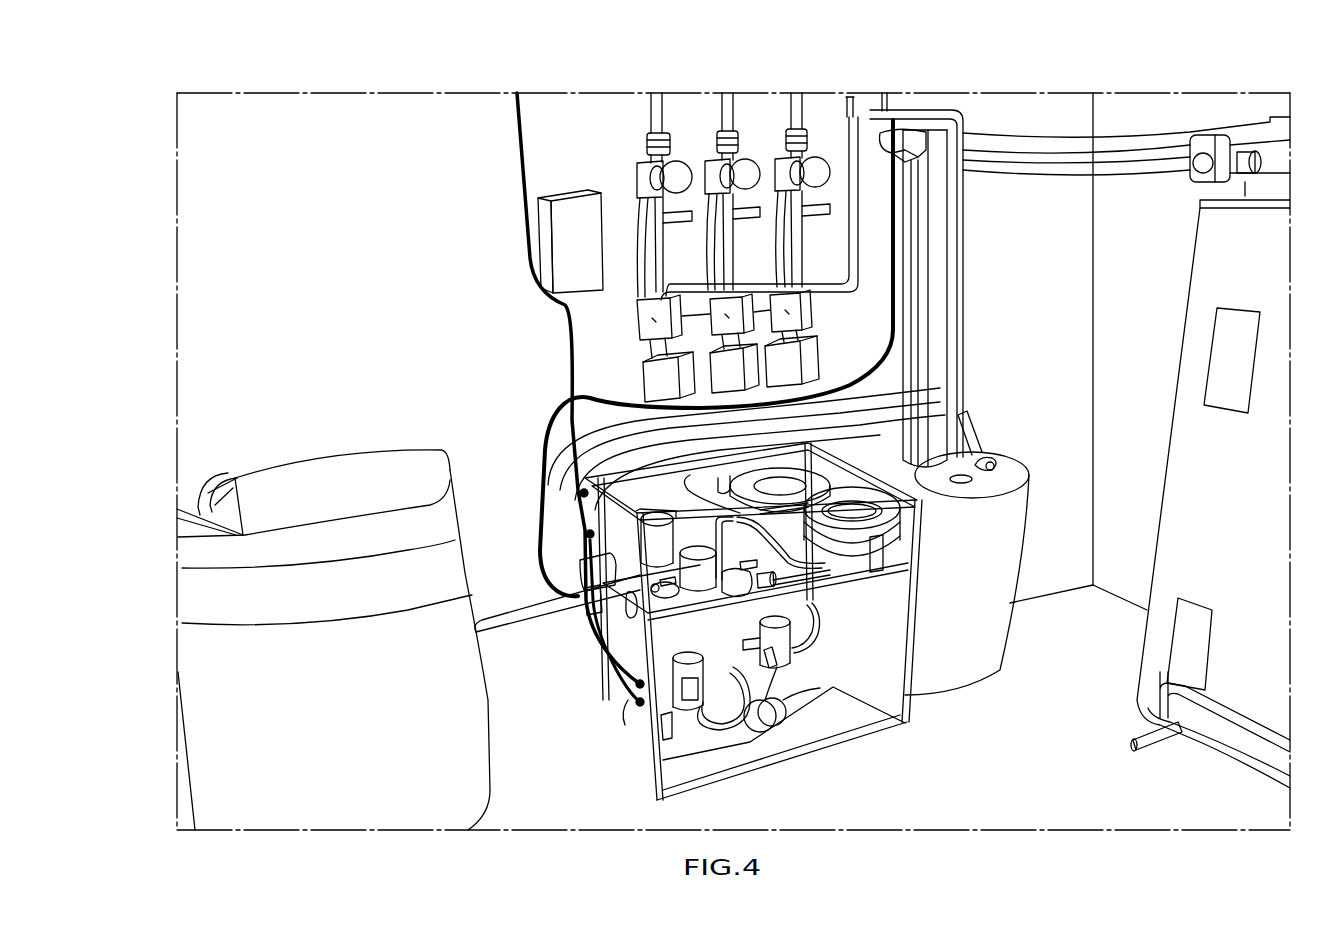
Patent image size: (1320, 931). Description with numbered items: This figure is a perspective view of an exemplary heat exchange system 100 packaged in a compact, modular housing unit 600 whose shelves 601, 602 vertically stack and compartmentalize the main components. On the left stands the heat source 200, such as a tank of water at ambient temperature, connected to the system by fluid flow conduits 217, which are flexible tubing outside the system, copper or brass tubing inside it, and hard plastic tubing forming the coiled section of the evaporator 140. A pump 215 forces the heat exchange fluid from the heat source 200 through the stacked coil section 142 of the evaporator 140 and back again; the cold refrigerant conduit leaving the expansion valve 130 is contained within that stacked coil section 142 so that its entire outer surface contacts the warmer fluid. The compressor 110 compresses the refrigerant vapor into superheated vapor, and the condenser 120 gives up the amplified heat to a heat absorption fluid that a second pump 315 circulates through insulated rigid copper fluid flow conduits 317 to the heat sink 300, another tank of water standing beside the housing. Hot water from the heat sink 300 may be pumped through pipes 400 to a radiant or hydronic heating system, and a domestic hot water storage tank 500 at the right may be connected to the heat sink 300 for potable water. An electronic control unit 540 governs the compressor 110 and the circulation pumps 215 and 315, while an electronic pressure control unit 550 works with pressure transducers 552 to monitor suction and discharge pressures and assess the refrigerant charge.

The heat exchange system 100 is at (736, 388).
The compressor 110 is at (800, 658).
The condenser 120 is at (816, 460).
The expansion valve 130 is at (733, 487).
The evaporator 140 is at (945, 564).
The stacked coil section 142 is at (903, 520).
The heat source 200 is at (420, 444).
The pump 215 is at (637, 680).
The fluid flow conduits 217 is at (530, 657).
The heat sink 300 is at (1002, 446).
The pump 315 is at (636, 540).
The fluid flow conduits 317 is at (535, 495).
The pipes 400 is at (964, 292).
The domestic hot water storage tank 500 is at (1186, 256).
The electronic control unit 540 is at (675, 738).
The electronic pressure control unit 550 is at (710, 705).
The pressure transducers 552 is at (808, 645).
The housing unit 600 is at (802, 571).
The shelf 601 is at (835, 742).
The shelf 602 is at (636, 708).